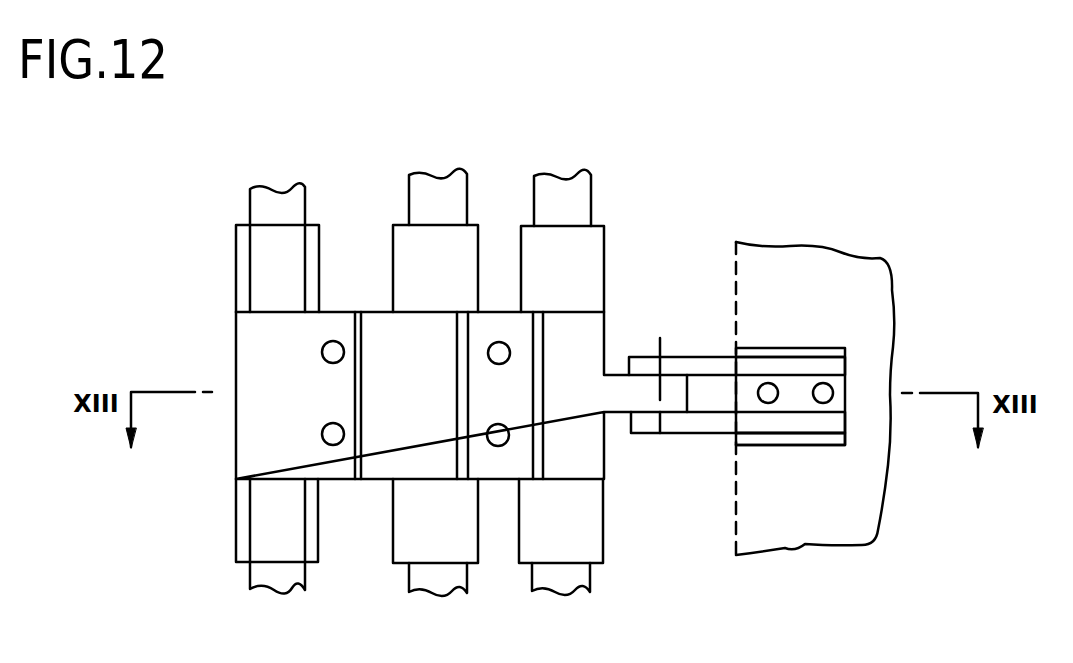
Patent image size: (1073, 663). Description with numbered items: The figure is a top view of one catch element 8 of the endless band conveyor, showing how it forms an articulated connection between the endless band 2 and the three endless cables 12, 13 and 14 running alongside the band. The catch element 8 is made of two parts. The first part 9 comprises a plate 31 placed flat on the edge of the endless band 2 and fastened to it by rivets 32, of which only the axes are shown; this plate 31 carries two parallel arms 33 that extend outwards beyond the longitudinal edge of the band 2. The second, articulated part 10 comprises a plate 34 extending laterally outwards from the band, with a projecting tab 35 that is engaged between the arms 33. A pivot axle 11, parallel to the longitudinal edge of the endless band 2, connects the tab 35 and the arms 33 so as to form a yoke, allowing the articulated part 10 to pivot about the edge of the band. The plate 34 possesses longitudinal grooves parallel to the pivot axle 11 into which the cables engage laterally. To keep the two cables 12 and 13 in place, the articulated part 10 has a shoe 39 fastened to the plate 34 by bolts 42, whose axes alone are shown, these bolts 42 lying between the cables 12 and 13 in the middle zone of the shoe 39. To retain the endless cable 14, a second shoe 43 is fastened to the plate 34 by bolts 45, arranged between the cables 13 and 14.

The endless band 2 is at (861, 314).
The catch element 8 is at (625, 262).
The part fastened to the edge of the band 9 is at (757, 346).
The articulated part 10 is at (371, 481).
The pivot axle 11 is at (660, 433).
The endless cable 12 is at (580, 210).
The endless cable 13 is at (413, 206).
The endless cable 14 is at (256, 202).
The plate 31 is at (783, 412).
The rivets 32 is at (832, 385).
The parallel arms 33 is at (685, 358).
The plate 34 is at (240, 244).
The projecting tab 35 is at (617, 358).
The shoe 39 is at (526, 257).
The bolts 42 is at (507, 441).
The shoe 43 is at (250, 330).
The bolts 45 is at (323, 437).